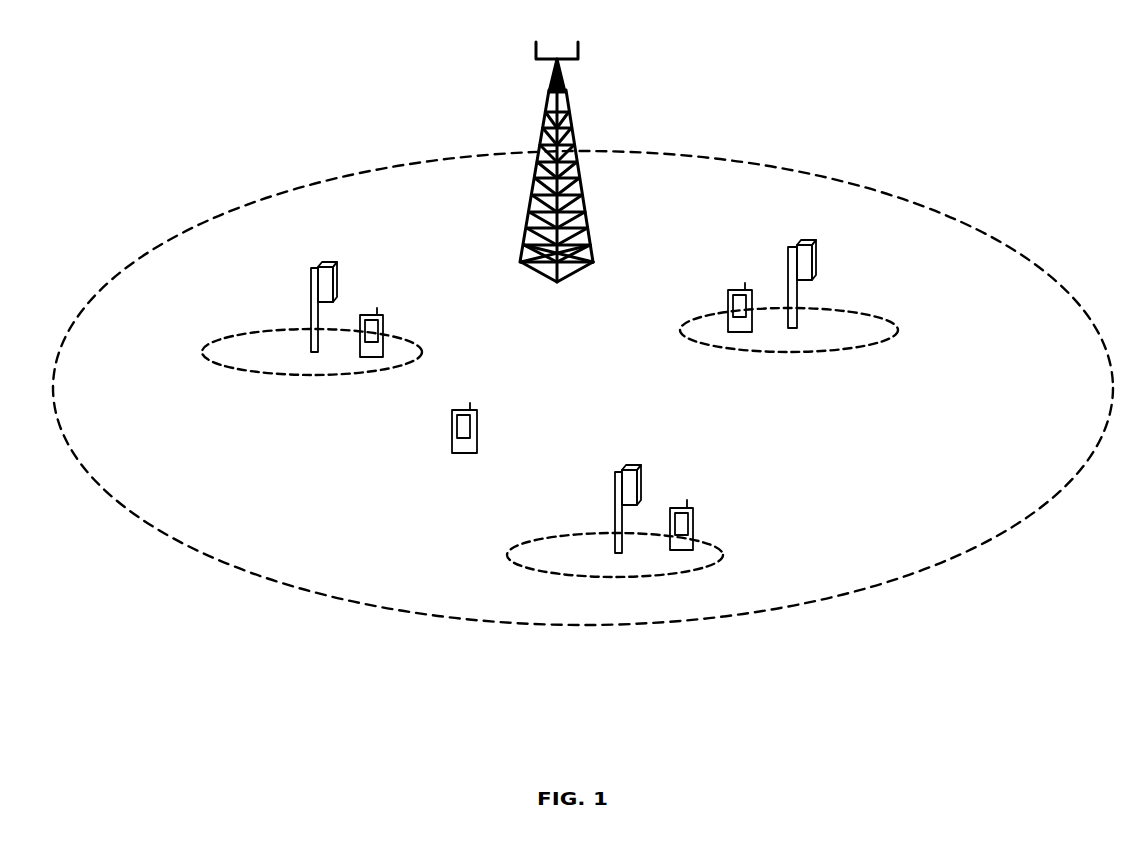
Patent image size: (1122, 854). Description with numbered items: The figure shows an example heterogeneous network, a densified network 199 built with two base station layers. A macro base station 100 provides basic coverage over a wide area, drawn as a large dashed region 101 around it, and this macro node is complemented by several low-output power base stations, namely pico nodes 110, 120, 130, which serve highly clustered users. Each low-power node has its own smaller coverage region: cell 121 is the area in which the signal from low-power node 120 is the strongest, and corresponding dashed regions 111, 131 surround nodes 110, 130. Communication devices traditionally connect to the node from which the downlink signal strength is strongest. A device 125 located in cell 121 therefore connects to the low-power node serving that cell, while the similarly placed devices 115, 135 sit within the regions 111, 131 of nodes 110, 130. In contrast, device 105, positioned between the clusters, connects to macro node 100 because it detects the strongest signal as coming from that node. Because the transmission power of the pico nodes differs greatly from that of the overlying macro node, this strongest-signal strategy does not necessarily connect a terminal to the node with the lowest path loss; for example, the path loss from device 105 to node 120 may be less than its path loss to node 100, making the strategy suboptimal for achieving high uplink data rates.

The densified network 199 is at (306, 69).
The macro base station 100 is at (584, 162).
The base station coverage area 101 is at (583, 373).
The device 105 is at (492, 419).
The low-output power base station 110 is at (843, 277).
The access point coverage area 111 is at (815, 315).
The user equipment 115 is at (707, 307).
The low-power node 120 is at (670, 499).
The cell 121 is at (658, 547).
The device 125 is at (717, 524).
The low-output power base station 130 is at (365, 293).
The access point coverage area 131 is at (285, 338).
The user equipment 135 is at (408, 326).